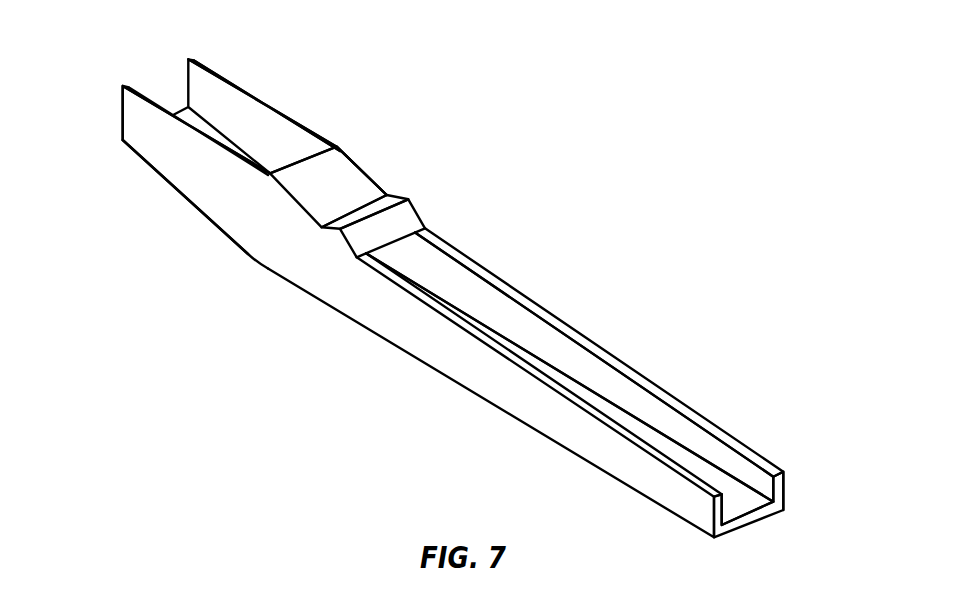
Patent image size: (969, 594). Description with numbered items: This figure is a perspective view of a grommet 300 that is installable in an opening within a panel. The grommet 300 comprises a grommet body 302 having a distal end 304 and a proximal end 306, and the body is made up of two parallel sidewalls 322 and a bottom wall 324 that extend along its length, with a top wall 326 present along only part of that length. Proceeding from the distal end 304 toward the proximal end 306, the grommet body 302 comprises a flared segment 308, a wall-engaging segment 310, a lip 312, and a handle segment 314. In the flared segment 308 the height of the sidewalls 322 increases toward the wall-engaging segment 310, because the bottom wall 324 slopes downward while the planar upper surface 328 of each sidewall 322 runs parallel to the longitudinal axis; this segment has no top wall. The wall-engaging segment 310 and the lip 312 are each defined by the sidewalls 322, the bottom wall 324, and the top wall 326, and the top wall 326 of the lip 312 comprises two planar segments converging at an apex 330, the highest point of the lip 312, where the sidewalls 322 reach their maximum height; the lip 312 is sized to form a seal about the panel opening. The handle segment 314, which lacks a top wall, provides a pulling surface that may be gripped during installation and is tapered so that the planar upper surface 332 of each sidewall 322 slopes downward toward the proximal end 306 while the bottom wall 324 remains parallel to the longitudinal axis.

The grommet 300 is at (565, 179).
The grommet body 302 is at (405, 352).
The distal end 304 is at (122, 120).
The proximal end 306 is at (722, 527).
The flared segment 308 is at (297, 118).
The wall-engaging segment 310 is at (365, 170).
The lip 312 is at (425, 217).
The handle segment 314 is at (558, 318).
The sidewalls 322 is at (222, 184).
The bottom wall 324 is at (741, 503).
The top wall 326 is at (324, 174).
The upper surface 328 is at (243, 92).
The apex 330 is at (385, 198).
The upper surface 332 is at (680, 410).